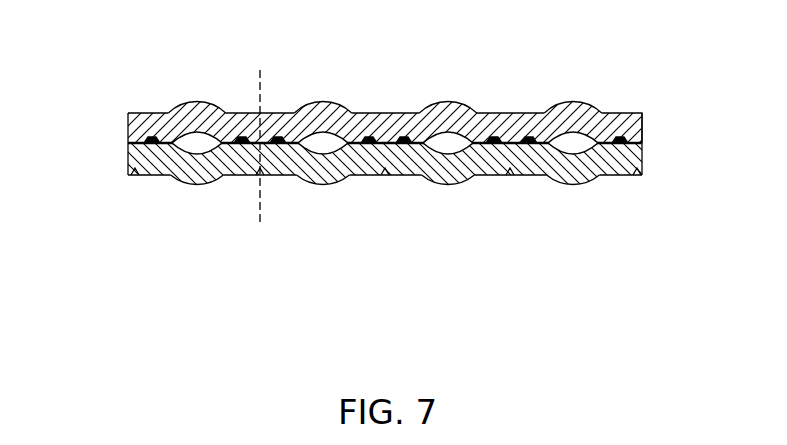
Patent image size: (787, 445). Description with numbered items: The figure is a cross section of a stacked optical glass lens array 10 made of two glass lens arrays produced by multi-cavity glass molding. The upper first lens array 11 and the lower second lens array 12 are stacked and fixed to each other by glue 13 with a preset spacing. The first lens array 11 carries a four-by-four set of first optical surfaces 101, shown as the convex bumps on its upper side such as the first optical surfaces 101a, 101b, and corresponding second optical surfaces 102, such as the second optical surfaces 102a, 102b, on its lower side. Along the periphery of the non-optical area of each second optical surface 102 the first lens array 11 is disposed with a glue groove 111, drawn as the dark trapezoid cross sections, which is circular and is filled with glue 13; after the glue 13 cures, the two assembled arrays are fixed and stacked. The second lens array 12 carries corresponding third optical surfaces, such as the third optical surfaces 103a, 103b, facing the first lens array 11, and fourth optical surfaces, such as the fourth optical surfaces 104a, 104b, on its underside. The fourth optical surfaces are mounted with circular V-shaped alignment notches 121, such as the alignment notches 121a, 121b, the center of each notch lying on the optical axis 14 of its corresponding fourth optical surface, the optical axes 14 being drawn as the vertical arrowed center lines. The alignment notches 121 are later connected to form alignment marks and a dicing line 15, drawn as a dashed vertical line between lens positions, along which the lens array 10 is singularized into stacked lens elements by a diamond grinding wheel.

The lens array 10 is at (116, 57).
The first lens array 11 is at (632, 123).
The second lens array 12 is at (632, 160).
The glue 13 is at (395, 112).
The optical axis 14 is at (573, 227).
The dicing line 15 is at (262, 162).
The glue groove 111 is at (427, 112).
The first optical surface 101 is at (438, 78).
The first optical surface 101a is at (588, 104).
The first optical surface 101b is at (458, 108).
The second optical surface 102 is at (433, 108).
The second optical surface 102a is at (630, 112).
The second optical surface 102b is at (483, 113).
The third optical surface 103a is at (590, 183).
The third optical surface 103b is at (470, 178).
The fourth optical surface 104a is at (576, 188).
The fourth optical surface 104b is at (453, 188).
The alignment notch 121 is at (433, 217).
The alignment notch 121a is at (513, 172).
The alignment notch 121b is at (385, 176).